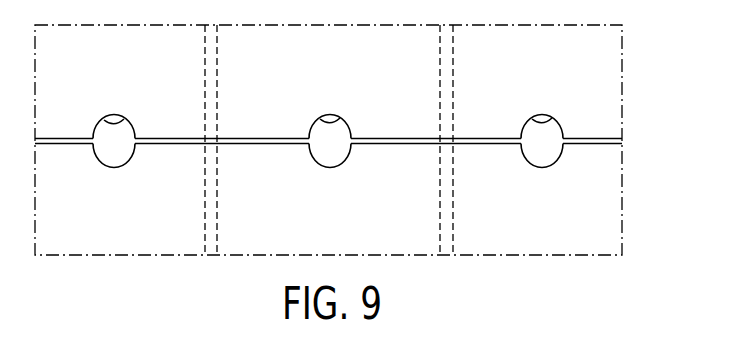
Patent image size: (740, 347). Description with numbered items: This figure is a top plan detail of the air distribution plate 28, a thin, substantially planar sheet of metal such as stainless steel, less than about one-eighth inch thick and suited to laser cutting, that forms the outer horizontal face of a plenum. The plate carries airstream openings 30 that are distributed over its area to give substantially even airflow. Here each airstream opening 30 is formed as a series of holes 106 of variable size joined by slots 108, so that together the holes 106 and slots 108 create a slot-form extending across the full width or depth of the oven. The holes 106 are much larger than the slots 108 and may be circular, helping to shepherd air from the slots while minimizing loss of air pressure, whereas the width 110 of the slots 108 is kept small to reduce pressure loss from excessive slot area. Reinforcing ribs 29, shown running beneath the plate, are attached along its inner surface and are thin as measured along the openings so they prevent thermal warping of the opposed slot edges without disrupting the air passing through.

The air distribution plate 28 is at (503, 202).
The reinforcing ribs 29 is at (218, 100).
The airstream openings 30 is at (553, 149).
The holes 106 is at (125, 120).
The slots 108 is at (258, 144).
The width 110 is at (180, 181).